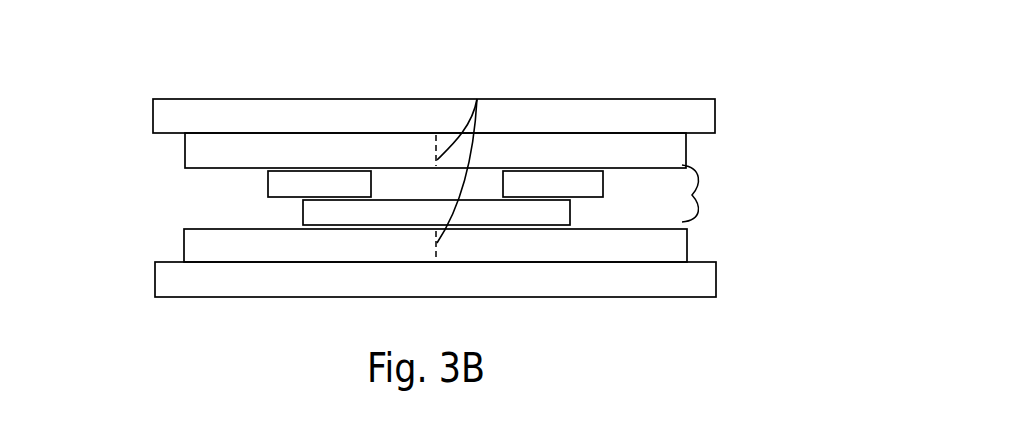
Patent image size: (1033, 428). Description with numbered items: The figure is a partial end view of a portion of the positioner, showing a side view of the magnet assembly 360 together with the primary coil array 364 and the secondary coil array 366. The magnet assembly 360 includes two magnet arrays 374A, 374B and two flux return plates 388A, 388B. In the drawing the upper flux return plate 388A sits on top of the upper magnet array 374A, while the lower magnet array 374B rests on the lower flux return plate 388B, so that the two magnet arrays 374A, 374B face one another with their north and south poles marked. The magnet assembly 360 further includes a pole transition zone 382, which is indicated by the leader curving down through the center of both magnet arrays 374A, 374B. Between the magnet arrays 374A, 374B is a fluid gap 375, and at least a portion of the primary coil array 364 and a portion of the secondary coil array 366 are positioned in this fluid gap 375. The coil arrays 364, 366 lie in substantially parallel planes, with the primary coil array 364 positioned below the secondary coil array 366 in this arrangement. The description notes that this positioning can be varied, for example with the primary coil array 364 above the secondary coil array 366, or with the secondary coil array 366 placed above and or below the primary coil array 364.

The magnet assembly 360 is at (772, 96).
The flux return plate 388A is at (716, 107).
The magnet array 374A is at (687, 146).
The secondary coil array 366 is at (230, 185).
The fluid gap 375 is at (718, 193).
The primary coil array 364 is at (184, 244).
The magnet array 374B is at (688, 249).
The flux return plate 388B is at (716, 277).
The pole transition zone 382 is at (477, 99).